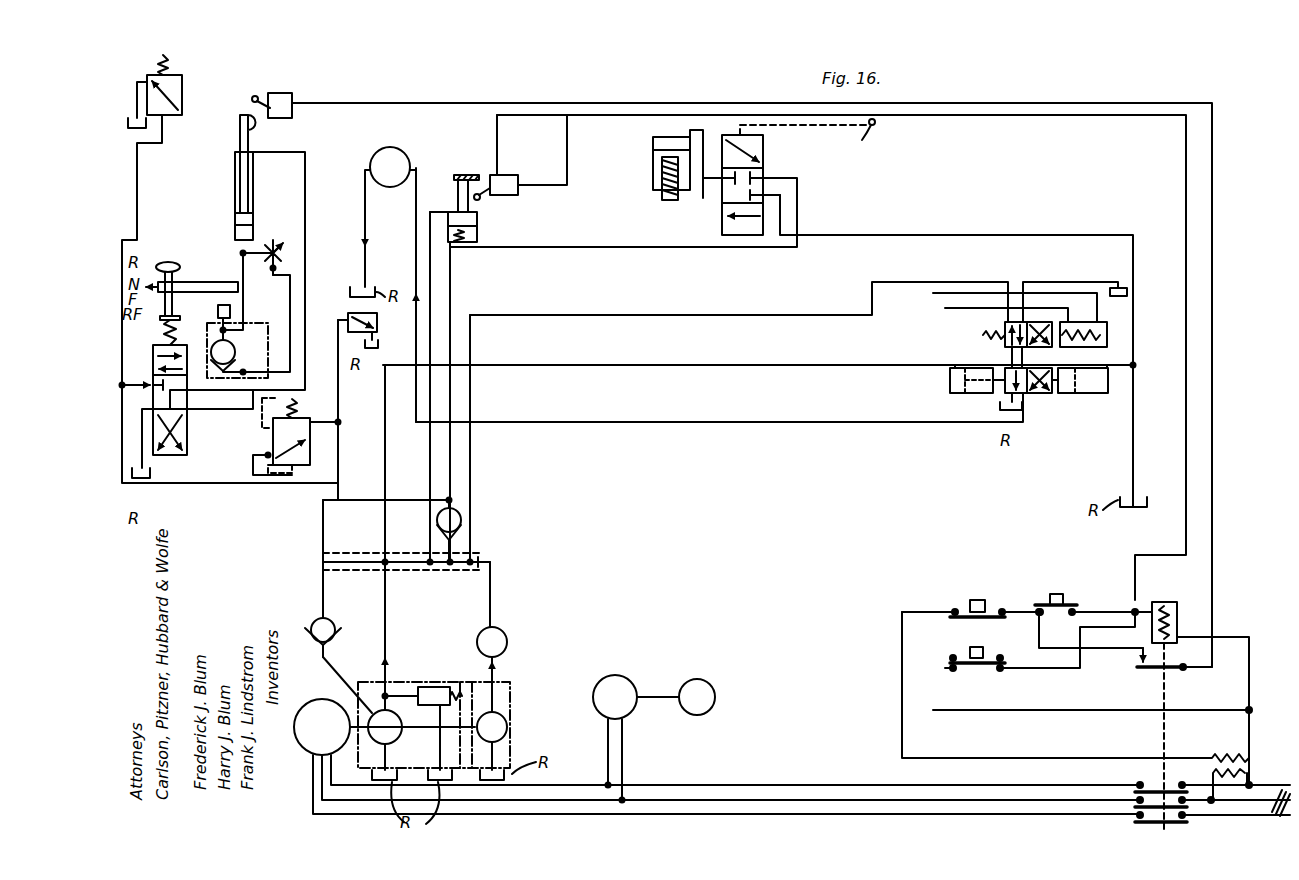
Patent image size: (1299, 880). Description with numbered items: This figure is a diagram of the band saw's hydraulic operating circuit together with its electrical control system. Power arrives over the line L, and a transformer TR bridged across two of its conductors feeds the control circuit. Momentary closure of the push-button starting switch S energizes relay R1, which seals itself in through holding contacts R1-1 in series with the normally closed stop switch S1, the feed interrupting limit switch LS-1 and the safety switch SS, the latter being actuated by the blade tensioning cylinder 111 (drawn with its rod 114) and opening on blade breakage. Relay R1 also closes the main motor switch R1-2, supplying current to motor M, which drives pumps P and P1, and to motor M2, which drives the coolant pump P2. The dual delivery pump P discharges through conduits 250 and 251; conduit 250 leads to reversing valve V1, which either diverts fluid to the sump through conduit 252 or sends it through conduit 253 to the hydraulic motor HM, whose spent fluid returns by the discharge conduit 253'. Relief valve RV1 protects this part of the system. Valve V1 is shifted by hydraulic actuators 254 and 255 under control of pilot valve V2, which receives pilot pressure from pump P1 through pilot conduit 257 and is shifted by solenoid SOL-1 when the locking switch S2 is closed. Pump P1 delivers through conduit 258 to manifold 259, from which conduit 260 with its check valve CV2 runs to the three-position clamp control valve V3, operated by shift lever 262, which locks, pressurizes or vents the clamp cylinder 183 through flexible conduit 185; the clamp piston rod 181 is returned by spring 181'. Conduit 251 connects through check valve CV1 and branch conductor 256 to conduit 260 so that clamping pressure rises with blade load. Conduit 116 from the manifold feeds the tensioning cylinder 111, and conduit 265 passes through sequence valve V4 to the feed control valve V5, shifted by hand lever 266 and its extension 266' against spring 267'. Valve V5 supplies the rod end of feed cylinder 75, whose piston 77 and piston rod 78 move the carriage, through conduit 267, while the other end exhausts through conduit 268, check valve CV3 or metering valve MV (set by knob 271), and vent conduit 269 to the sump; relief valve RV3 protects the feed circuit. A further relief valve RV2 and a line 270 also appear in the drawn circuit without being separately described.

The relief valve RV2 is at (176, 86).
The feed interrupting limit switch LS-1 is at (284, 94).
The piston rod 78 is at (250, 143).
The cylinder 75 is at (250, 185).
The working piston 77 is at (252, 218).
The conduit 267 is at (258, 280).
The conduit 270 is at (282, 330).
The hand lever 266 is at (186, 276).
The extension 266' is at (192, 273).
The spring 267' is at (192, 320).
The feed control valve V5 is at (152, 378).
The metering valve MV is at (285, 254).
The knob 271 is at (278, 268).
The discharge conduit 253' is at (351, 233).
The check valve CV3 is at (248, 326).
The conduit 268 is at (246, 326).
The relief valve RV3 is at (377, 322).
The sequence valve V4 is at (272, 436).
The hydraulic motor HM is at (402, 162).
The blade tensioning cylinder 111 is at (472, 233).
The plunger 114 is at (458, 196).
The safety switch SS is at (504, 174).
The conduit 260 is at (472, 304).
The pilot conduit 257 is at (548, 318).
The conduit 253 is at (719, 407).
The piston rod 181 is at (657, 181).
The cylinder 183 is at (654, 140).
The spring 181' is at (633, 178).
The flexible conduit 185 is at (706, 200).
The clamp control valve V3 is at (776, 170).
The manual shift lever 262 is at (870, 142).
The pilot valve V2 is at (1010, 320).
The solenoid SOL-1 is at (1108, 334).
The reversing valve V1 is at (1028, 396).
The hydraulic actuator 254 is at (950, 397).
The hydraulic actuator 255 is at (1088, 390).
The conduit 252 is at (1002, 408).
The conduit 116 is at (380, 490).
The branch conductor 256 is at (346, 500).
The conduit 265 is at (182, 484).
The vent conduit 269 is at (156, 470).
The check valve CV2 is at (462, 518).
The manifold 259 is at (436, 566).
The conduit 258 is at (500, 624).
The check valve CV1 is at (330, 620).
The conduit 251 is at (342, 686).
The conduit 250 is at (386, 626).
The motor M is at (312, 712).
The pump P is at (390, 736).
The relief valve RV1 is at (437, 686).
The pump P1 is at (504, 710).
The motor M2 is at (624, 686).
The pump P2 is at (708, 692).
The stop switch S1 is at (996, 606).
The push-button starting switch S is at (1060, 606).
The relay R1 is at (1163, 602).
The locking type manually operable switch S2 is at (982, 668).
The switch contacts R1-1 is at (1134, 672).
The transformer TR is at (1212, 768).
The main motor switch R1-2 is at (1138, 780).
The line L is at (1281, 785).